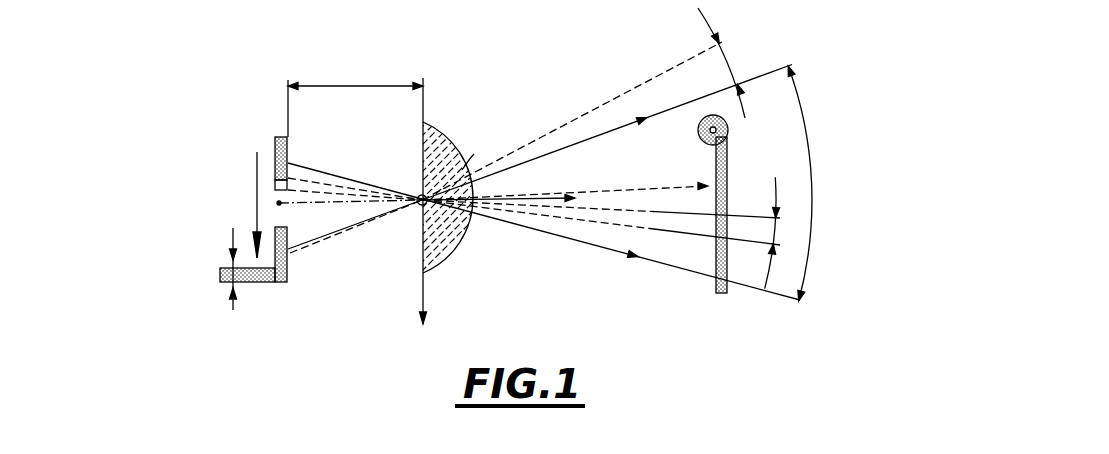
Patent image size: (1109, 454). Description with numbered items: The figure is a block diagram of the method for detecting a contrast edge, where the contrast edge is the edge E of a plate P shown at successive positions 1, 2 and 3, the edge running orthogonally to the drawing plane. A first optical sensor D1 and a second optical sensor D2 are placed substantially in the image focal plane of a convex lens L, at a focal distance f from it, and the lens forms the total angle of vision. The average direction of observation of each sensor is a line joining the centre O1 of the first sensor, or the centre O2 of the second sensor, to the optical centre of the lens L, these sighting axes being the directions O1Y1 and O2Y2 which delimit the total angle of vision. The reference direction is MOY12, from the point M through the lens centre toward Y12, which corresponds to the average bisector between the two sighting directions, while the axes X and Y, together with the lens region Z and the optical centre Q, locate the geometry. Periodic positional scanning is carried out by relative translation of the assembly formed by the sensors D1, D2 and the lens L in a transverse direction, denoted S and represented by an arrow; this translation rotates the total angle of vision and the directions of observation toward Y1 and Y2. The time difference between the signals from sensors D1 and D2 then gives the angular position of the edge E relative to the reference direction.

The translational scanning S is at (256, 168).
The first optical sensor D1 is at (288, 138).
The second optical sensor D2 is at (288, 264).
The centre of the first optical sensor O1 is at (292, 162).
The centre of the second optical sensor O2 is at (290, 254).
The reference direction point M is at (279, 205).
The lens center / nodal point Q is at (420, 196).
The lens surface / intermediate plane Z is at (476, 151).
The convex lens L is at (452, 255).
The X axis X is at (423, 214).
The Y axis / central ray Y is at (507, 202).
The direction of observation of the first optical sensor Y1 is at (591, 243).
The direction of observation of the second optical sensor Y2 is at (576, 142).
The reference direction Y12 is at (568, 177).
The edge of the plate E is at (709, 130).
The plate P is at (727, 193).
The first successive position of the plate 1 is at (737, 139).
The second successive position of the plate 2 is at (737, 154).
The third successive position of the plate 3 is at (737, 170).
The focal distance of the lens f is at (355, 99).